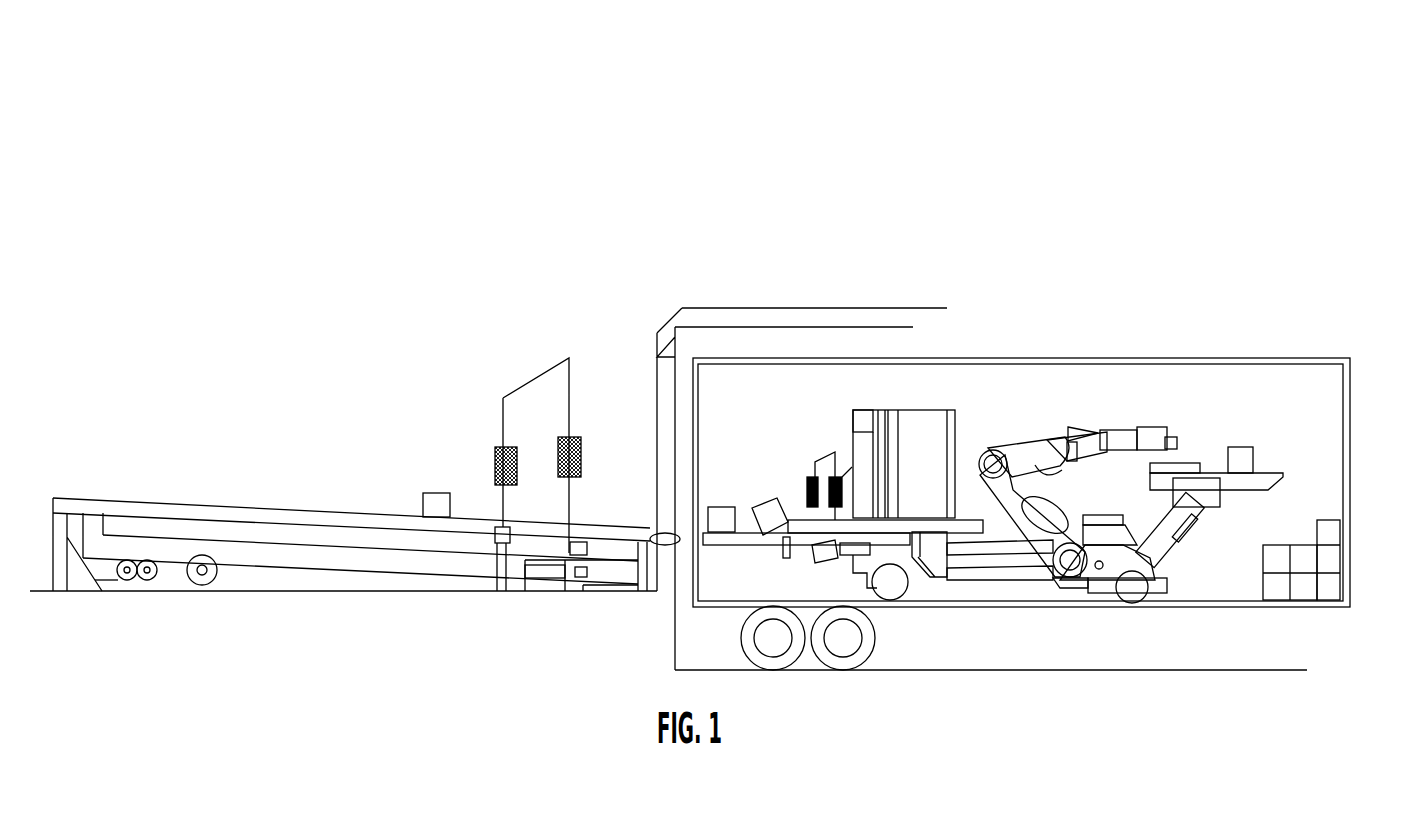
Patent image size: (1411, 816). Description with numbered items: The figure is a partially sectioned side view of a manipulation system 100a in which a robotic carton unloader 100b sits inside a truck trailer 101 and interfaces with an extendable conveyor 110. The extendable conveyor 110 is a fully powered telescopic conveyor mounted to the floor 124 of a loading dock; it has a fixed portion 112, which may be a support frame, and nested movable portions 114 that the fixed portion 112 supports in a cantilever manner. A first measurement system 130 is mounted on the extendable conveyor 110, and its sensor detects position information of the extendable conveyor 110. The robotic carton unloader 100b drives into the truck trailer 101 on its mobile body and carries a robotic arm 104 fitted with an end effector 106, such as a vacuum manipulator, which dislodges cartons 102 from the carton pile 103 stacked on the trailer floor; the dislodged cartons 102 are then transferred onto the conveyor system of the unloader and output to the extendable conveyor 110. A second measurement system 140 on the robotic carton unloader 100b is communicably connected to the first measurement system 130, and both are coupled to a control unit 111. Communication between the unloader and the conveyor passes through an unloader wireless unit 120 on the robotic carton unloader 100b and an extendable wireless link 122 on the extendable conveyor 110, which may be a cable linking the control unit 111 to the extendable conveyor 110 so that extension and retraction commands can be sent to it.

The manipulation system 100a is at (585, 168).
The robotic carton unloader 100b is at (1112, 491).
The truck trailer 101 is at (987, 585).
The cartons 102 is at (765, 503).
The carton pile 103 is at (1302, 570).
The robotic arm 104 is at (1095, 423).
The end effector 106 is at (1180, 442).
The extendable conveyor 110 is at (313, 508).
The control unit 111 is at (942, 453).
The fixed portion 112 is at (122, 502).
The movable portions 114 is at (830, 555).
The unloader wireless unit 120 is at (515, 535).
The extendable wireless link 122 is at (862, 417).
The floor 124 is at (275, 592).
The first measurement system 130 is at (503, 378).
The second measurement system 140 is at (823, 448).